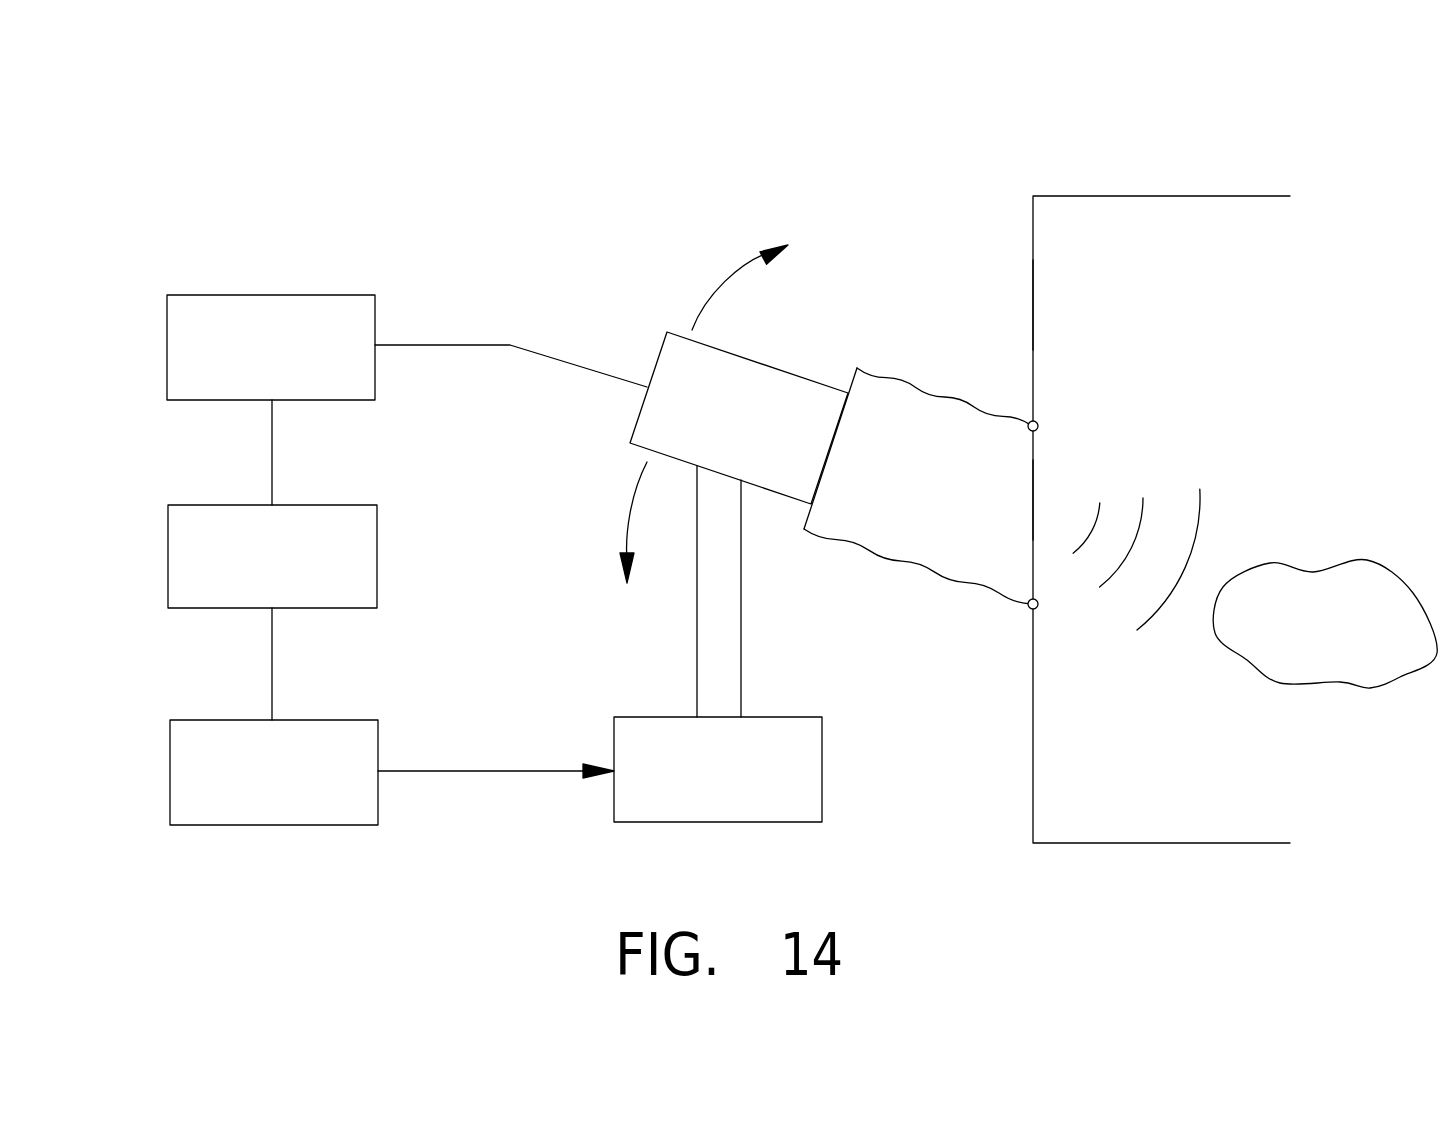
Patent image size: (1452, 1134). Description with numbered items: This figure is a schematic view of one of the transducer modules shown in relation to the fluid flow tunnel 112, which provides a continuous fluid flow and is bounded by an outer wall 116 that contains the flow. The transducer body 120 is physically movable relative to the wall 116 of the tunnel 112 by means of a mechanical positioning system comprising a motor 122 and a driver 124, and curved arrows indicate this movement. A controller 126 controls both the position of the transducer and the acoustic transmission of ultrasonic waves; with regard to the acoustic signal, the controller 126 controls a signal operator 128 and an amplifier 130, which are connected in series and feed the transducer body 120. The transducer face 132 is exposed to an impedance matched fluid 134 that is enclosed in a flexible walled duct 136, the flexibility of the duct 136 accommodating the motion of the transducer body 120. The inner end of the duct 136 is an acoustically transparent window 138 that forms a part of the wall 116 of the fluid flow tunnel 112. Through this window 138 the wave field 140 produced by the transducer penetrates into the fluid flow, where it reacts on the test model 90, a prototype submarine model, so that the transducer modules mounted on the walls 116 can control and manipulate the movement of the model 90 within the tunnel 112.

The model 90 is at (1283, 540).
The fluid flow tunnel 112 is at (1118, 175).
The outer walls 116 is at (1032, 303).
The transducer body 120 is at (747, 357).
The motor 122 is at (758, 717).
The driver 124 is at (712, 675).
The controller 126 is at (313, 720).
The signal operator 128 is at (312, 505).
The amplifier 130 is at (312, 295).
The transducer face 132 is at (830, 450).
The impedance matched fluid 134 is at (968, 518).
The flexible walled duct 136 is at (887, 380).
The acoustically transparent window 138 is at (1033, 500).
The wave field 140 is at (1153, 628).